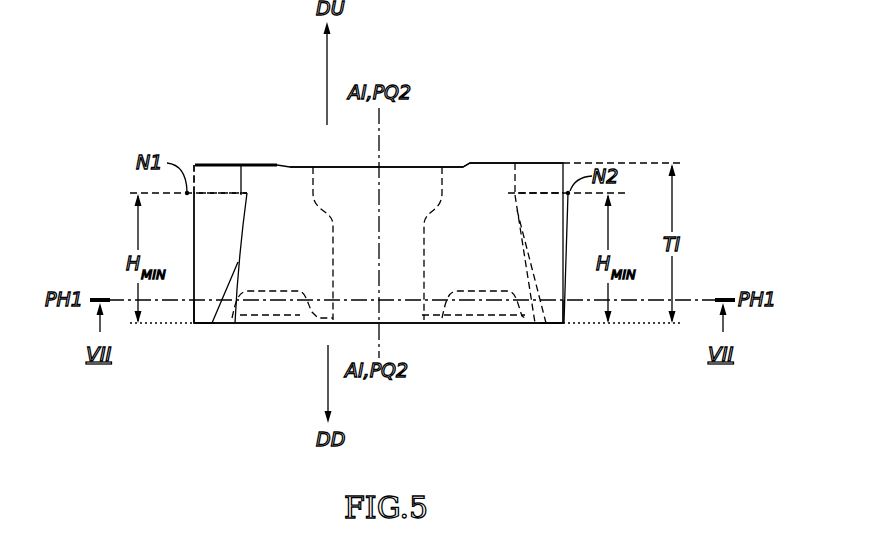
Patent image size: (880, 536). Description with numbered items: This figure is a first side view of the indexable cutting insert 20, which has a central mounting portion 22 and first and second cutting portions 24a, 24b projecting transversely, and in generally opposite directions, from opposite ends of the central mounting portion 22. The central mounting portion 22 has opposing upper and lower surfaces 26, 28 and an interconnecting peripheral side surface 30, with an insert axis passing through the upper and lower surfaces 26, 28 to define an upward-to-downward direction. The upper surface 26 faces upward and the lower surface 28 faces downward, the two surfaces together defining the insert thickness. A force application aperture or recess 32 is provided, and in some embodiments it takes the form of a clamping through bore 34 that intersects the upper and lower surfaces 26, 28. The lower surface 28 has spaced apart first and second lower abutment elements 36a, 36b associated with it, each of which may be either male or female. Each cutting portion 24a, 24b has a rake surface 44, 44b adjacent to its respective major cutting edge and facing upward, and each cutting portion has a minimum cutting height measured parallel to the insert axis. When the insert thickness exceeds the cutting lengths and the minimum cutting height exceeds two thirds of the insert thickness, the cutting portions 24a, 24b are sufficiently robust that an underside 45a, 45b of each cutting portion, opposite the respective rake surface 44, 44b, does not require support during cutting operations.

The indexable cutting insert 20 is at (565, 88).
The central mounting portion 22 is at (443, 278).
The first cutting portion 24a is at (190, 242).
The second cutting portion 24b is at (570, 240).
The upper surface 26 is at (239, 160).
The lower surface 28 is at (252, 332).
The peripheral side surface 30 is at (490, 265).
The force application aperture or recess 32 is at (397, 160).
The clamping through bore 34 is at (417, 160).
The first lower abutment element 36a is at (270, 312).
The second lower abutment element 36b is at (477, 312).
The rake surface 44 is at (217, 190).
The rake surface 44b is at (538, 190).
The underside 45a is at (201, 330).
The underside 45b is at (561, 330).